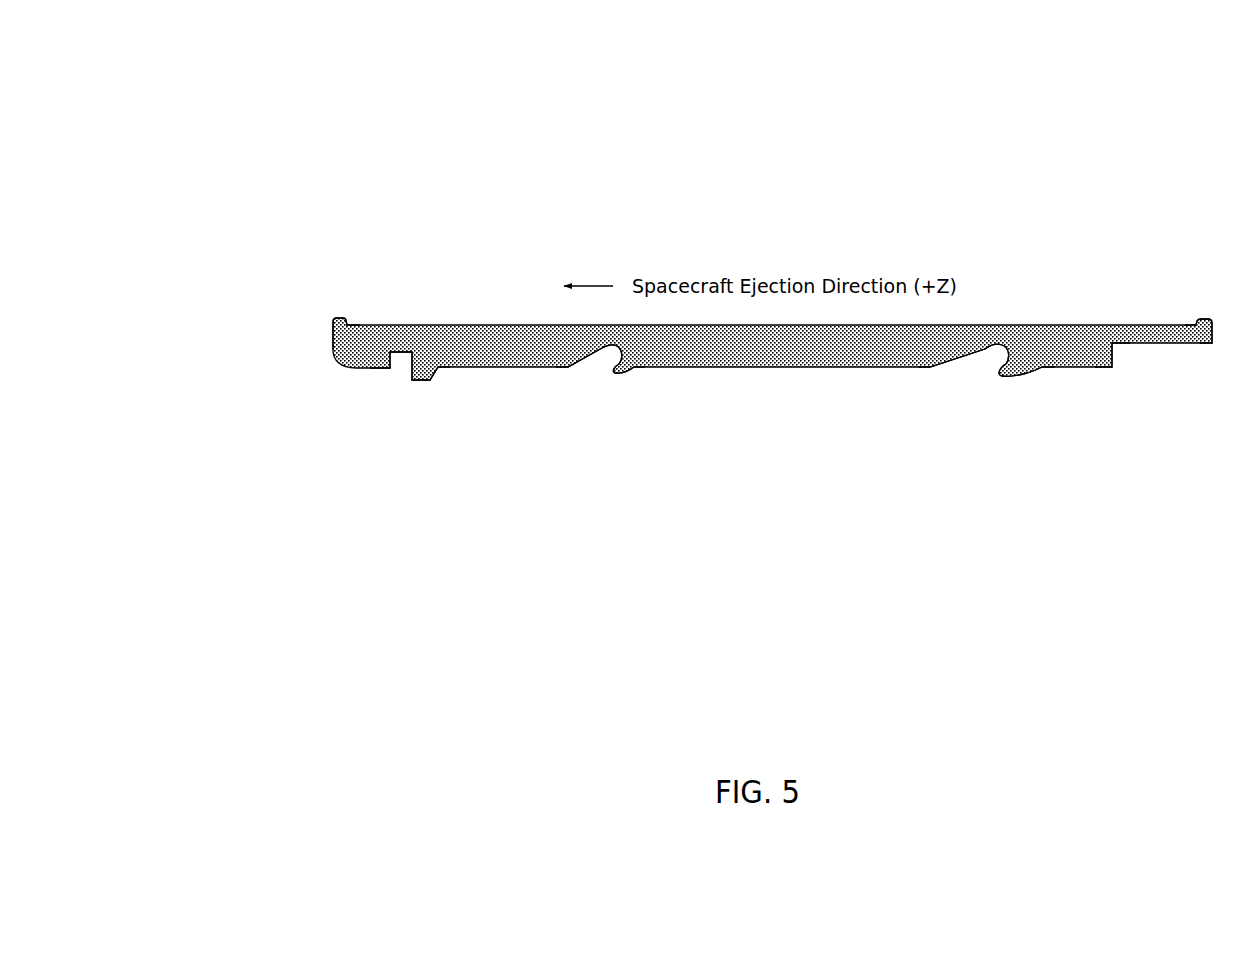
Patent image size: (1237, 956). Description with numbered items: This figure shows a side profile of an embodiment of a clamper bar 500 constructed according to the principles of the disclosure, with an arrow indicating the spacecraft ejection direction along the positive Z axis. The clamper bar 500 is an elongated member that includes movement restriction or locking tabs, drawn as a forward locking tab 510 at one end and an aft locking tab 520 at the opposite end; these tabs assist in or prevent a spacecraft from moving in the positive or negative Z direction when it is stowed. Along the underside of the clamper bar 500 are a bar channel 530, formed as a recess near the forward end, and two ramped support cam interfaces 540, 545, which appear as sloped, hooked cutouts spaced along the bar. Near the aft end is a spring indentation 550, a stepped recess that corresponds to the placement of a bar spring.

The clamper bar 500 is at (306, 126).
The forward locking tab 510 is at (342, 312).
The aft locking tab 520 is at (1203, 318).
The bar channel 530 is at (393, 363).
The ramped support cam interface 540 is at (601, 357).
The ramped support cam interface 545 is at (977, 362).
The spring indentation 550 is at (1116, 354).